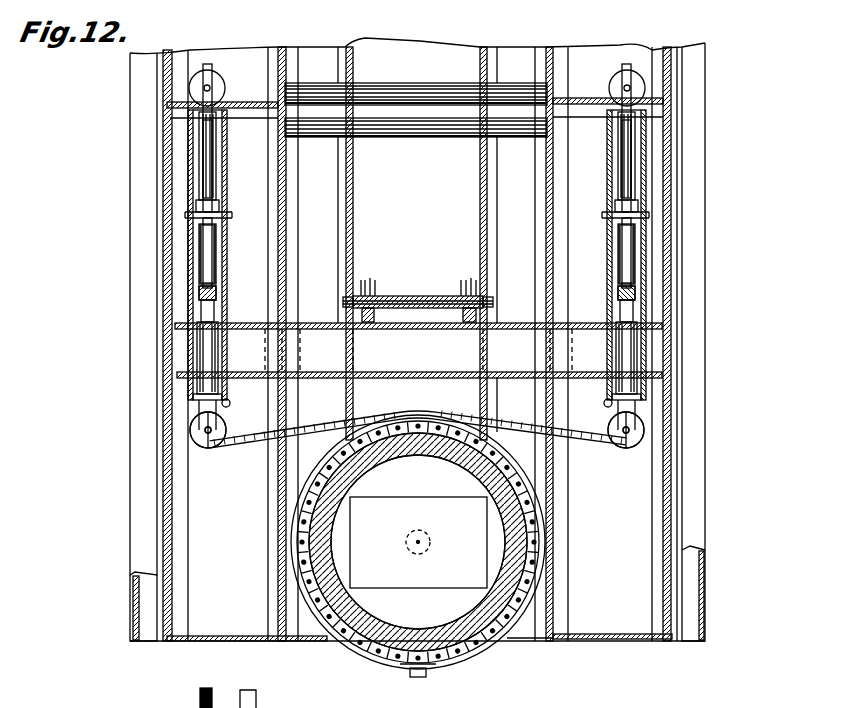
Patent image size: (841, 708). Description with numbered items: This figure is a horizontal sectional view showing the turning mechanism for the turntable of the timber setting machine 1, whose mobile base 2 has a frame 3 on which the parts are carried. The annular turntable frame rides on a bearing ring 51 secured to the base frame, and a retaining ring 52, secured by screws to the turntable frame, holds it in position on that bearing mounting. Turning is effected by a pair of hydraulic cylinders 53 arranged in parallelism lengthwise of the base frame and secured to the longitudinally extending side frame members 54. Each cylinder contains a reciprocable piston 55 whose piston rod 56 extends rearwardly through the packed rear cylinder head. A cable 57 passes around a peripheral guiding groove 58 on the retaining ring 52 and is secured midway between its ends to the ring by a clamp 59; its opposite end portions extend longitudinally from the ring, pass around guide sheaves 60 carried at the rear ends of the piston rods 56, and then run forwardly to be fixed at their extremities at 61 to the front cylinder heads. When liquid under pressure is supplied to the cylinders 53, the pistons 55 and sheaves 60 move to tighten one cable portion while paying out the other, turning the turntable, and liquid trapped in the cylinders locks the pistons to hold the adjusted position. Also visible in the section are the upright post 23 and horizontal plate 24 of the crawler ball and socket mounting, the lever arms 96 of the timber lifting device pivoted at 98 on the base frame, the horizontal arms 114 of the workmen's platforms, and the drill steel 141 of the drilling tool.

The timber setting machine 1 is at (670, 203).
The mobile base 2 is at (522, 50).
The frame 3 is at (668, 152).
The upright post 23 is at (430, 535).
The horizontal plate 24 is at (460, 575).
The bearing ring 51 is at (373, 652).
The retaining ring 52 is at (357, 645).
The hydraulic cylinders 53 is at (215, 243).
The side frame members 54 is at (180, 315).
The pistons 55 is at (220, 300).
The piston rods 56 is at (210, 183).
The cable 57 is at (540, 506).
The peripheral guiding groove 58 is at (500, 640).
The clamp 59 is at (415, 676).
The guide sheaves 60 is at (212, 86).
The cable end fixing points 61 is at (228, 402).
The lever arms 96 is at (375, 291).
The pivot axes 98 is at (417, 295).
The horizontal arms 114 is at (140, 506).
The drill steel 141 is at (198, 697).